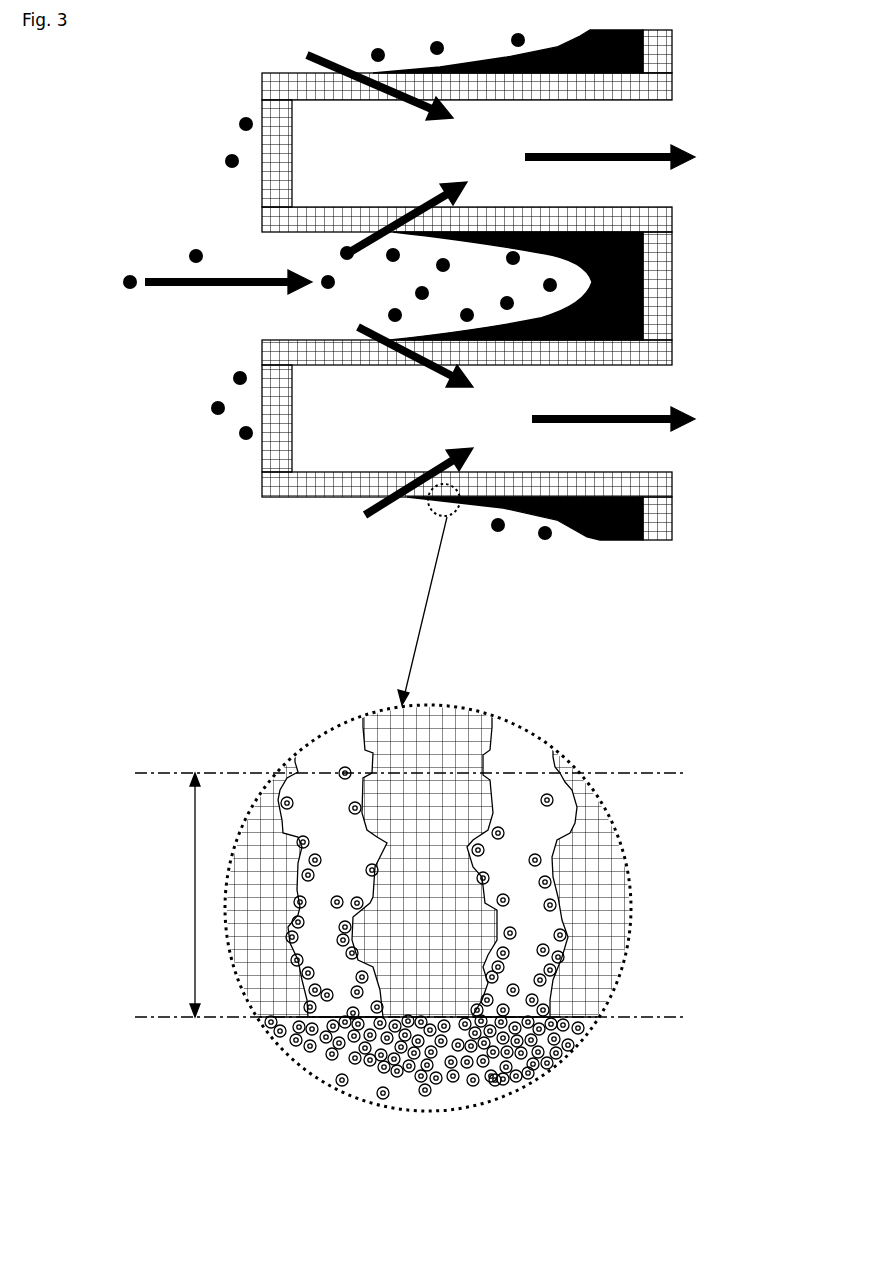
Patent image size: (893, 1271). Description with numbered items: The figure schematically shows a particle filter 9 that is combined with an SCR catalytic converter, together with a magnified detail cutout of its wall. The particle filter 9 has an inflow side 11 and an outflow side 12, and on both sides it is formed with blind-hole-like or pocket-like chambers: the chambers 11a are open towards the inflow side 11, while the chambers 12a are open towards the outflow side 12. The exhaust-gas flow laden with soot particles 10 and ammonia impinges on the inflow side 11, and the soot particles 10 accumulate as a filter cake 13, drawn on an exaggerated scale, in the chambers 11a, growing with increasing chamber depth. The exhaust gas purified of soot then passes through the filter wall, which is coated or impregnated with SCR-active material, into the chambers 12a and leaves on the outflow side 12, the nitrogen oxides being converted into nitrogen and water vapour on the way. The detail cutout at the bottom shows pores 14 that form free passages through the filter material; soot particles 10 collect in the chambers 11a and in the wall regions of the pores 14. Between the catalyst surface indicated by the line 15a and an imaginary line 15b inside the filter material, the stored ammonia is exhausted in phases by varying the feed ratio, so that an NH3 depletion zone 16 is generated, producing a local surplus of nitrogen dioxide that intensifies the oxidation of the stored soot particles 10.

The particle filter 9 is at (262, 80).
The soot particles 10 is at (188, 242).
The inflow side 11 is at (125, 402).
The blind-hole-like or pocket-like chambers on the inflow side 11a is at (500, 276).
The outflow side 12 is at (770, 294).
The blind-hole-like or pocket-like chambers on the outflow side 12a is at (384, 167).
The filter cake 13 is at (643, 328).
The pores 14 is at (520, 753).
The catalyst surface line 15a is at (156, 1018).
The imaginary line 15b is at (158, 773).
The NH3 depletion zone 16 is at (195, 875).